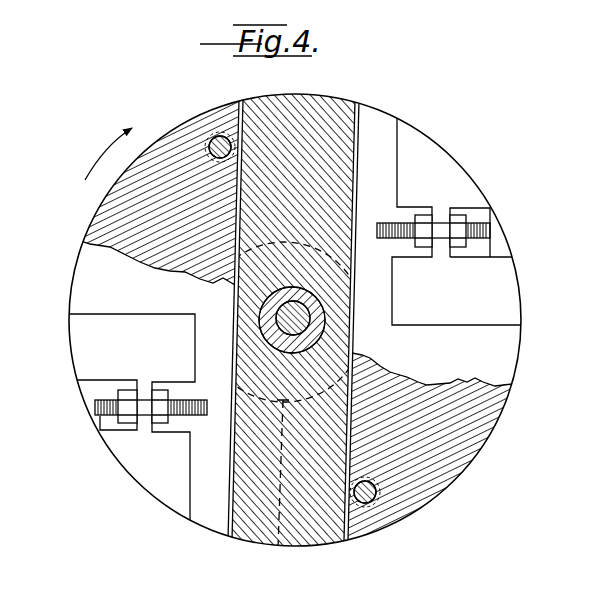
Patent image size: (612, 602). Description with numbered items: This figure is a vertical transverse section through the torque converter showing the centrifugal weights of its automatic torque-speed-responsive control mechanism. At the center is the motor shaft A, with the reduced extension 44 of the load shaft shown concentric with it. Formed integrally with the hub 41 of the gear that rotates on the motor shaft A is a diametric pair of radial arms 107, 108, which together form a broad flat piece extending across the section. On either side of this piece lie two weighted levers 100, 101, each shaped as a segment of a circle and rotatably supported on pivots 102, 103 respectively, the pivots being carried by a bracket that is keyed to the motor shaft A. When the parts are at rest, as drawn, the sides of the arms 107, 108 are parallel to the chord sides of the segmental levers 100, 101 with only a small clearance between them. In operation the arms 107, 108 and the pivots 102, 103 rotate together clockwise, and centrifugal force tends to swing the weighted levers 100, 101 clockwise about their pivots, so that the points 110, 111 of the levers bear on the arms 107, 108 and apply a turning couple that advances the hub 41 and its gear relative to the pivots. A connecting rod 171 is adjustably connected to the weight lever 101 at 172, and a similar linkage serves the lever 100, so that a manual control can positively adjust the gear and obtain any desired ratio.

The hub 41 is at (278, 546).
The reduced extension 44 is at (288, 318).
The weighted lever 100 is at (435, 487).
The weighted lever 101 is at (160, 148).
The pivot 102 is at (372, 503).
The pivot 103 is at (213, 136).
The radial arm 107 is at (335, 110).
The radial arm 108 is at (316, 538).
The point 110 is at (350, 538).
The point 111 is at (236, 100).
The connecting rod 171 is at (389, 222).
The adjustable connection 172 is at (431, 212).
The motor shaft A is at (325, 321).